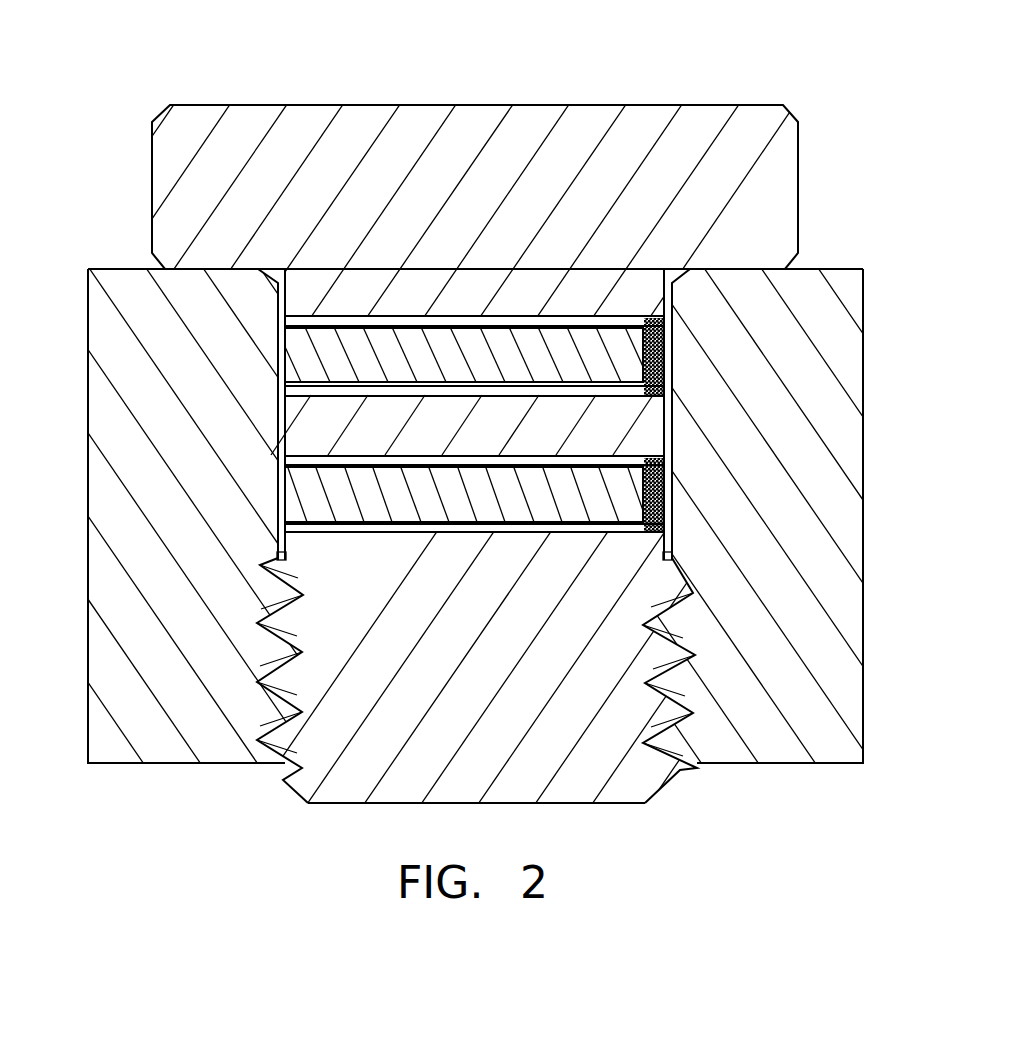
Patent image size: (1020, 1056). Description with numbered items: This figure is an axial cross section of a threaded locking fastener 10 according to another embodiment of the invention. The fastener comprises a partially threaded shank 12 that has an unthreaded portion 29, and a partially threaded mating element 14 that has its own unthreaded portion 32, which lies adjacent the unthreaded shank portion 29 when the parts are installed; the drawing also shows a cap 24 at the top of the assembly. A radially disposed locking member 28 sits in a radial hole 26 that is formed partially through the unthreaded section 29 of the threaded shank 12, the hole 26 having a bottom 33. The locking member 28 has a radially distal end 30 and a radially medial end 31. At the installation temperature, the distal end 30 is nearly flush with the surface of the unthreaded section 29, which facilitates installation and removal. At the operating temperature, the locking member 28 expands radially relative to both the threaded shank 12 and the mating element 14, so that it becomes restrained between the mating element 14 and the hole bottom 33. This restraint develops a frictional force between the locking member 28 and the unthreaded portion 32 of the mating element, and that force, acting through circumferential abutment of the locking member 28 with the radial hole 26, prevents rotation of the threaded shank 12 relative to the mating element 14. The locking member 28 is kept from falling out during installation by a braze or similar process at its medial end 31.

The fitting assembly 10 is at (145, 118).
The partially threaded shank 12 is at (469, 724).
The partially threaded mating element 14 is at (190, 611).
The cap 24 is at (800, 140).
The radial hole 26 is at (370, 458).
The locking member 28 is at (407, 513).
The unthreaded portion of shank 29 is at (667, 413).
The radially distal end 30 is at (277, 490).
The radially medial end 31 is at (668, 484).
The unthreaded portion of mating element 32 is at (669, 440).
The hole bottom 33 is at (668, 509).